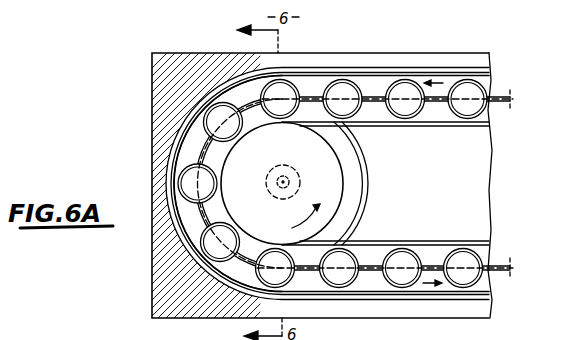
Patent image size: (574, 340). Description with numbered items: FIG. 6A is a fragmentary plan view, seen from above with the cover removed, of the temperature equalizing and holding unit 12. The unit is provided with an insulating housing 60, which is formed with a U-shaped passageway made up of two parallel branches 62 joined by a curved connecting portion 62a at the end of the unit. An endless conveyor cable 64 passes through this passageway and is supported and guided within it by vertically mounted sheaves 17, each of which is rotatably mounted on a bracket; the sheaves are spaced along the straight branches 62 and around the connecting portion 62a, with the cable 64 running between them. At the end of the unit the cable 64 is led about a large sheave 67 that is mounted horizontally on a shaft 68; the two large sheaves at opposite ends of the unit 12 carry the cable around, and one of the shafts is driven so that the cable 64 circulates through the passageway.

The temperature equalizing and holding unit 12 is at (418, 47).
The rolling elements (rollers) 17 is at (387, 92).
The insulating housing 60 is at (473, 55).
The parallel branches 62 is at (432, 80).
The connecting portion 62a is at (180, 146).
The endless conveyor cable 64 is at (386, 98).
The large sheave 67 is at (354, 208).
The shaft 68 is at (290, 170).